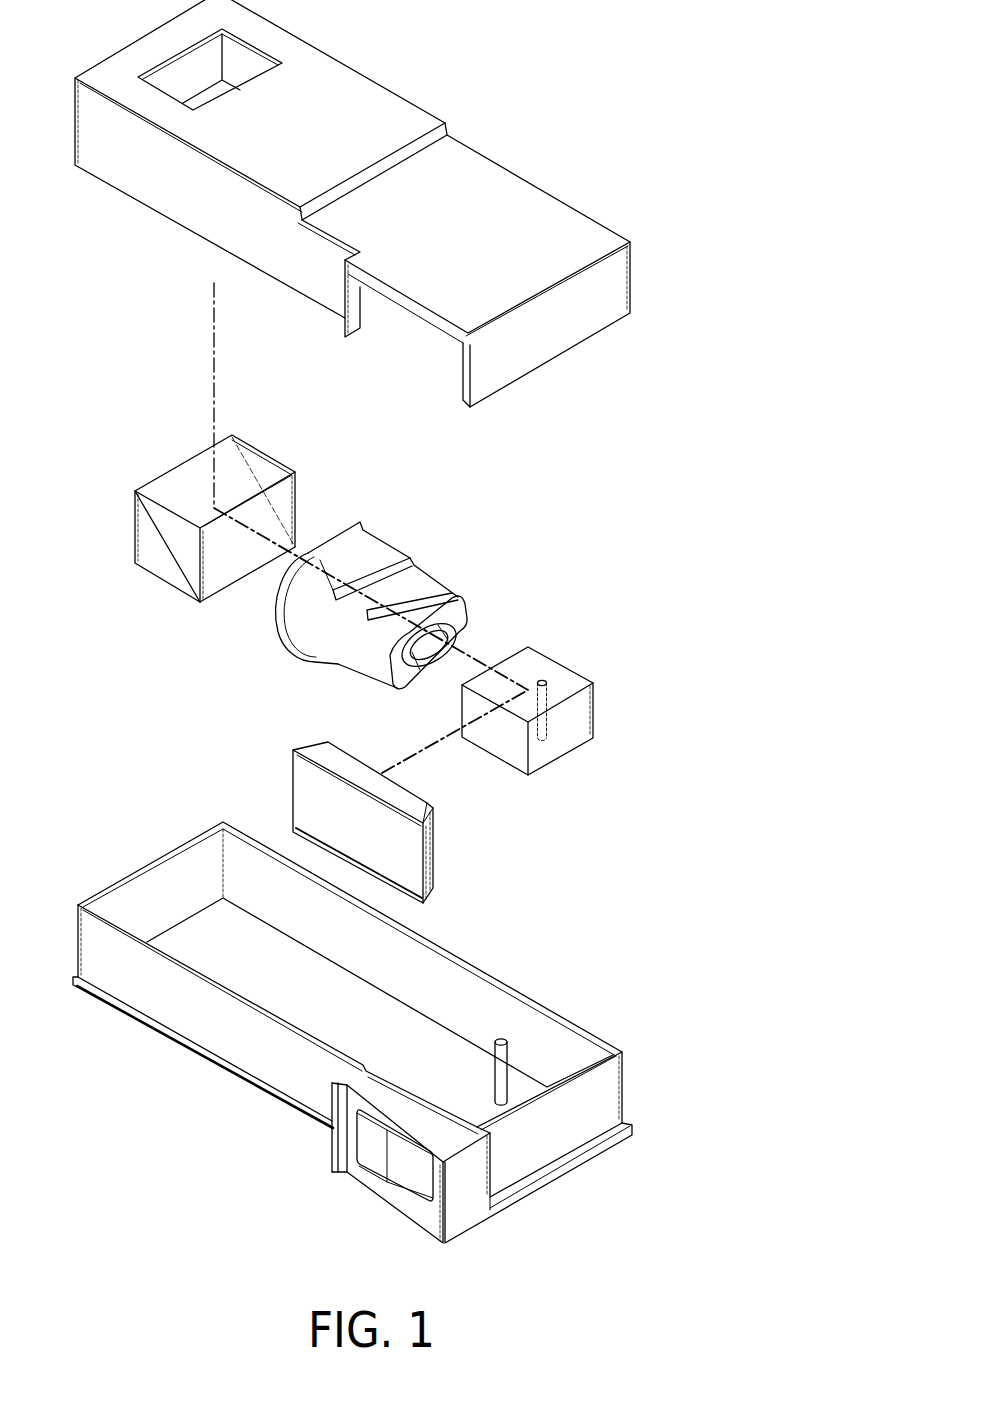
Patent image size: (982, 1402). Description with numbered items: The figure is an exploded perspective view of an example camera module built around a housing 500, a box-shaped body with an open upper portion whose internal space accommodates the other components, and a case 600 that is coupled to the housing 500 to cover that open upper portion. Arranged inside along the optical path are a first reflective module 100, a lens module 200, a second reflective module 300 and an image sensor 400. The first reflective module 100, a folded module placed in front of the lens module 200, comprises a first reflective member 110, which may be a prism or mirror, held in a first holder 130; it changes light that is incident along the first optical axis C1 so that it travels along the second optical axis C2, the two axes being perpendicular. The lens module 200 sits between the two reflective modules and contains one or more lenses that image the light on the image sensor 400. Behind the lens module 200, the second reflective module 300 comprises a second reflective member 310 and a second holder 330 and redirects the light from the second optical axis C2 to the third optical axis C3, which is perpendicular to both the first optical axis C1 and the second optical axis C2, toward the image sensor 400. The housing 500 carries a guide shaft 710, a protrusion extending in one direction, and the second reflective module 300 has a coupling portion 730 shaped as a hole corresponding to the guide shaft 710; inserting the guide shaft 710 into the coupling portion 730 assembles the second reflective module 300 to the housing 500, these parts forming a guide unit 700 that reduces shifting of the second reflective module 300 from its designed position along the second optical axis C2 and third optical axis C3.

The first reflective module 100 is at (185, 569).
The first reflective member 110 is at (190, 558).
The first holder 130 is at (147, 557).
The lens module 200 is at (307, 636).
The second reflective module 300 is at (530, 756).
The second reflective member 310 is at (507, 747).
The second holder 330 is at (570, 738).
The image sensor 400 is at (303, 790).
The housing 500 is at (170, 1003).
The case 600 is at (355, 88).
The guide unit 700 is at (647, 886).
The guide shaft 710 is at (504, 1038).
The coupling portion 730 is at (543, 680).
The first optical axis C1 is at (214, 372).
The second optical axis C2 is at (306, 545).
The third optical axis C3 is at (408, 754).